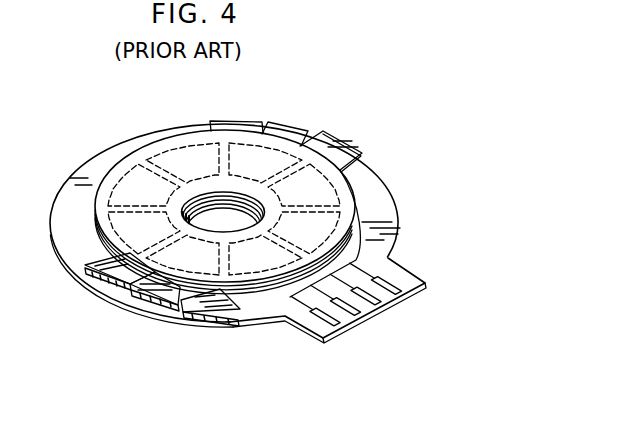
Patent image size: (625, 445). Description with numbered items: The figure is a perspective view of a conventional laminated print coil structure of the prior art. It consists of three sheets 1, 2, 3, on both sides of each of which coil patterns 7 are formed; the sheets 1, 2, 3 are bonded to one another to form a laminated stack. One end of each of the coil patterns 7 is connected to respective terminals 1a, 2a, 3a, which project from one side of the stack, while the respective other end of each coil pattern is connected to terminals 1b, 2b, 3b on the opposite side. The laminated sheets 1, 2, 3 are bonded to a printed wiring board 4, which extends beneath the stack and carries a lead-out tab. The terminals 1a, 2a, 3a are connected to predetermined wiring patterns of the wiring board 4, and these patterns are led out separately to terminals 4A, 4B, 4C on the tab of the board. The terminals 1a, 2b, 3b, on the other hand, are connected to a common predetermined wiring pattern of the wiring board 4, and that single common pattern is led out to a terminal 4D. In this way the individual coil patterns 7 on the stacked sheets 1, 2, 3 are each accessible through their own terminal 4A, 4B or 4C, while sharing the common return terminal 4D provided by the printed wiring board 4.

The sheet 1 is at (253, 287).
The terminal 1a is at (88, 282).
The terminal 1b is at (340, 140).
The sheet 2 is at (267, 287).
The terminal 2a is at (147, 302).
The terminal 2b is at (291, 130).
The sheet 3 is at (281, 289).
The terminal 3a is at (200, 307).
The terminal 3b is at (233, 123).
The printed wiring board 4 is at (379, 193).
The terminal 4A is at (388, 307).
The terminal 4B is at (367, 320).
The terminal 4C is at (344, 335).
The terminal 4D is at (424, 289).
The coil patterns 7 is at (167, 163).